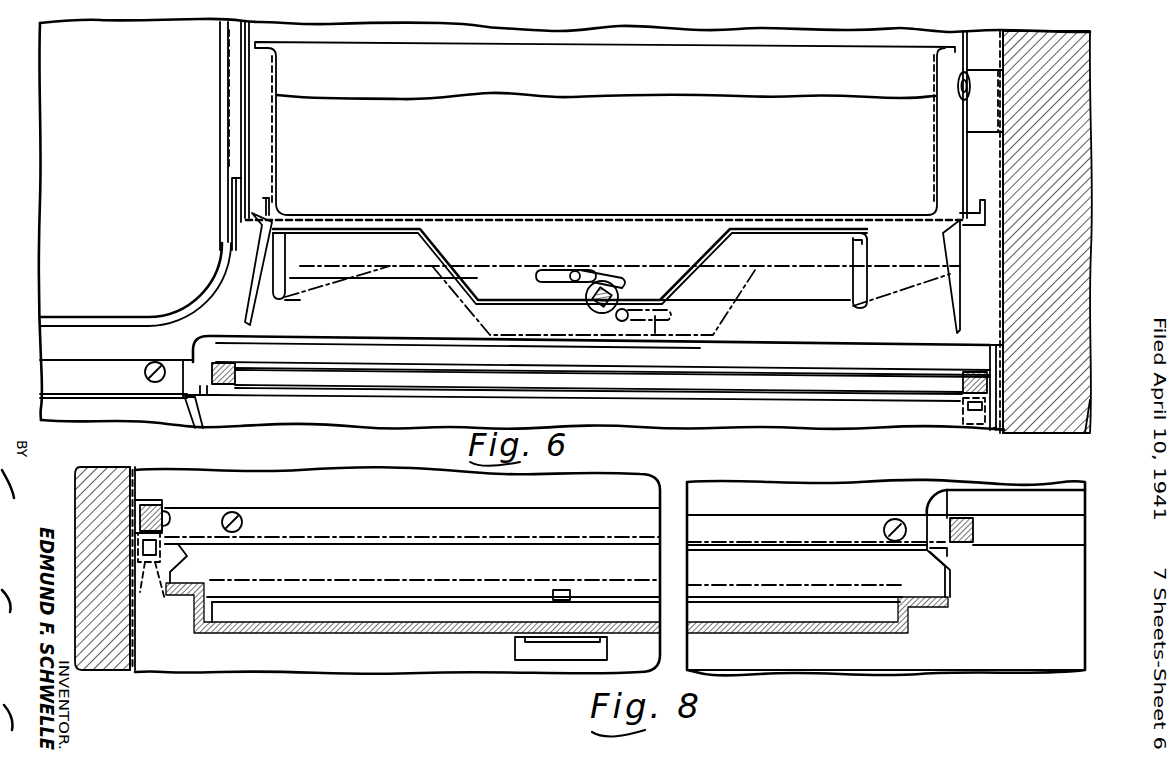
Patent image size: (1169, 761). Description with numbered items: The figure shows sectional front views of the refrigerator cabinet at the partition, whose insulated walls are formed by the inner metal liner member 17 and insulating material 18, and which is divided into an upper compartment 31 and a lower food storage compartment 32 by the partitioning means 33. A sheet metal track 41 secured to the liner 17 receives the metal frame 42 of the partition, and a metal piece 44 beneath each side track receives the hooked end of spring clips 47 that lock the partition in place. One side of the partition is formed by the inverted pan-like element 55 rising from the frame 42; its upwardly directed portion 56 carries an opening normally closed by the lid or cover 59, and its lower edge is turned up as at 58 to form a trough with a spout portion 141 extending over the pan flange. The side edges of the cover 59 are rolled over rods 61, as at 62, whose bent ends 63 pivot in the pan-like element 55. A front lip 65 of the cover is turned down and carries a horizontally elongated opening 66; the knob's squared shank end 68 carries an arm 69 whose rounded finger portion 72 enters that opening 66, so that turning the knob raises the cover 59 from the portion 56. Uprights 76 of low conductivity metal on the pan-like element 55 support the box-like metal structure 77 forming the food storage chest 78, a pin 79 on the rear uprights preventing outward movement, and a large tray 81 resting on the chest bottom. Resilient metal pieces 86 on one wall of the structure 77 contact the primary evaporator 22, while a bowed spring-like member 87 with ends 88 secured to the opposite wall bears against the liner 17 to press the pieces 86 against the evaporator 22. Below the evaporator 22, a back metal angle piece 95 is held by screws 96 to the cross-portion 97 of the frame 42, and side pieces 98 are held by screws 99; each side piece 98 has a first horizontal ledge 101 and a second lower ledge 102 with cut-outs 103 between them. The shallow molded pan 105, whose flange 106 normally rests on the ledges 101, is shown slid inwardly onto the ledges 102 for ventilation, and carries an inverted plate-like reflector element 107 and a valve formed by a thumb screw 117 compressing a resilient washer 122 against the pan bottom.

In FIG. 6, the inner metal liner member 17 is at (1020, 430).
In FIG. 8, the inner metal liner member 17 is at (132, 662).
In FIG. 6, the insulating material 18 is at (1045, 430).
In FIG. 8, the insulating material 18 is at (110, 655).
In FIG. 6, the primary evaporator 22 is at (110, 310).
In FIG. 6, the upper compartment 31 is at (985, 196).
In FIG. 8, the upper compartment 31 is at (886, 498).
In FIG. 6, the lower food storage compartment 32 is at (598, 403).
In FIG. 8, the lower food storage compartment 32 is at (886, 661).
In FIG. 6, the partitioning means 33 is at (520, 416).
In FIG. 8, the partitioning means 33 is at (1045, 548).
In FIG. 6, the sheet metal track 41 is at (1002, 430).
In FIG. 8, the sheet metal track 41 is at (143, 505).
In FIG. 6, the metal frame 42 is at (240, 378).
In FIG. 8, the metal frame 42 is at (155, 510).
In FIG. 6, the metal piece 44 is at (962, 405).
In FIG. 8, the metal piece 44 is at (176, 575).
In FIG. 6, the spring clips 47 is at (965, 416).
In FIG. 8, the spring clips 47 is at (147, 562).
In FIG. 6, the inverted pan-like element 55 is at (448, 355).
In FIG. 8, the inverted pan-like element 55 is at (980, 490).
In FIG. 6, the upwardly directed portion 56 is at (380, 282).
In FIG. 6, the upturned lower edge 58 is at (350, 345).
In FIG. 8, the upturned lower edge 58 is at (940, 502).
In FIG. 6, the lid or cover 59 is at (390, 230).
In FIG. 6, the rod 61 is at (856, 244).
In FIG. 6, the rolled-over side edge 62 is at (872, 243).
In FIG. 6, the bent rod end 63 is at (270, 300).
In FIG. 6, the downwardly turned front lip 65 is at (504, 245).
In FIG. 6, the horizontally elongated opening 66 is at (642, 276).
In FIG. 6, the squared shank end portion 68 is at (602, 300).
In FIG. 6, the arm 69 is at (570, 278).
In FIG. 6, the rounded finger portion 72 is at (548, 274).
In FIG. 6, the uprights 76 is at (252, 262).
In FIG. 6, the box-like metal structure 77 is at (962, 152).
In FIG. 6, the food storage chest 78 is at (603, 122).
In FIG. 6, the pin 79 is at (258, 196).
In FIG. 6, the tray 81 is at (635, 102).
In FIG. 6, the resilient metal pieces 86 is at (235, 142).
In FIG. 6, the bowed spring-like metal member 87 is at (978, 65).
In FIG. 6, the spring member ends 88 is at (968, 113).
In FIG. 6, the back metal angle piece 95 is at (90, 392).
In FIG. 8, the back metal angle piece 95 is at (298, 540).
In FIG. 6, the screws 96 is at (146, 370).
In FIG. 8, the screws 96 is at (240, 518).
In FIG. 8, the cross-portion 97 is at (178, 516).
In FIG. 6, the side pieces 98 is at (212, 395).
In FIG. 8, the side pieces 98 is at (975, 532).
In FIG. 8, the screws 99 is at (945, 520).
In FIG. 6, the first horizontal ledge 101 is at (240, 403).
In FIG. 8, the first horizontal ledge 101 is at (172, 540).
In FIG. 8, the second horizontal ledge 102 is at (180, 600).
In FIG. 6, the cut-out 103 is at (193, 412).
In FIG. 8, the cut-out 103 is at (948, 578).
In FIG. 8, the shallow pan 105 is at (395, 630).
In FIG. 8, the lip or flange 106 is at (392, 535).
In FIG. 8, the inverted plate-like reflector element 107 is at (368, 605).
In FIG. 8, the thumb screw 117 is at (520, 650).
In FIG. 8, the resilient washer 122 is at (605, 636).
In FIG. 6, the spout portion 141 is at (196, 340).
In FIG. 8, the spout portion 141 is at (945, 500).